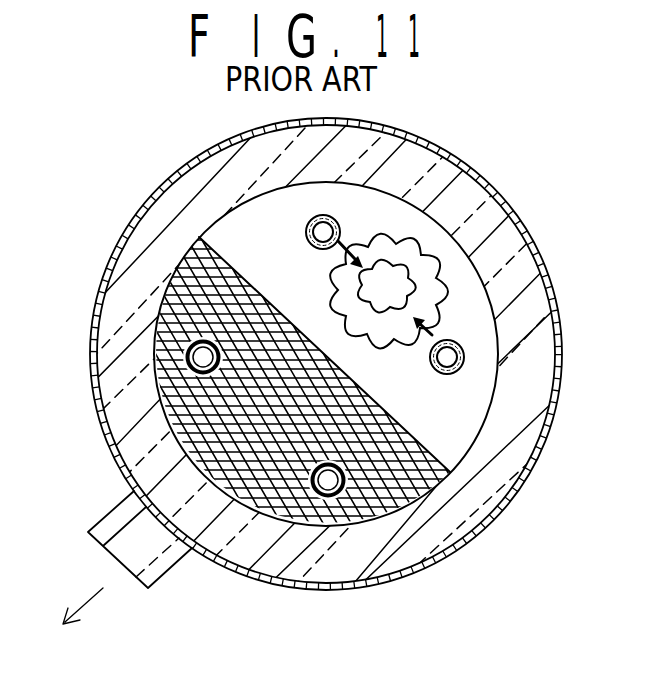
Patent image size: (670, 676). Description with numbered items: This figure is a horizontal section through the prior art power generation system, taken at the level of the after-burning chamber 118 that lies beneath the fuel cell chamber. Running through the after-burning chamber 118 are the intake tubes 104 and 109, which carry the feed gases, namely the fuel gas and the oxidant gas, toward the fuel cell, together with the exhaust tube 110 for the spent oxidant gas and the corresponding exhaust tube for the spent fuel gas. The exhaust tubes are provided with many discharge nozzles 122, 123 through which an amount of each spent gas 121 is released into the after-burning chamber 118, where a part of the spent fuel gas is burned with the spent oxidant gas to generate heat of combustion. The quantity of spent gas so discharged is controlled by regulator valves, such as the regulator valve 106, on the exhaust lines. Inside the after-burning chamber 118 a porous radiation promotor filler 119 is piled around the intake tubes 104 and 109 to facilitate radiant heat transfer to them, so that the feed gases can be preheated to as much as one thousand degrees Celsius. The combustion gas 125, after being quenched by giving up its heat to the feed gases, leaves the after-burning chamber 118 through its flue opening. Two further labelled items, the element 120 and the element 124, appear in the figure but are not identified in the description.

The intake tube 104 is at (187, 352).
The regulator valve 106 is at (455, 378).
The intake tube 109 is at (348, 530).
The exhaust tube 110 is at (312, 219).
The after-burning chamber 118 is at (476, 371).
The porous radiation promotor filler 119 is at (250, 468).
The burner nozzle 120 is at (432, 334).
The spent gas 121 is at (336, 249).
The discharge nozzle 122 is at (448, 341).
The discharge nozzle 123 is at (341, 242).
The flame 124 is at (322, 341).
The combustion gas 125 is at (104, 590).